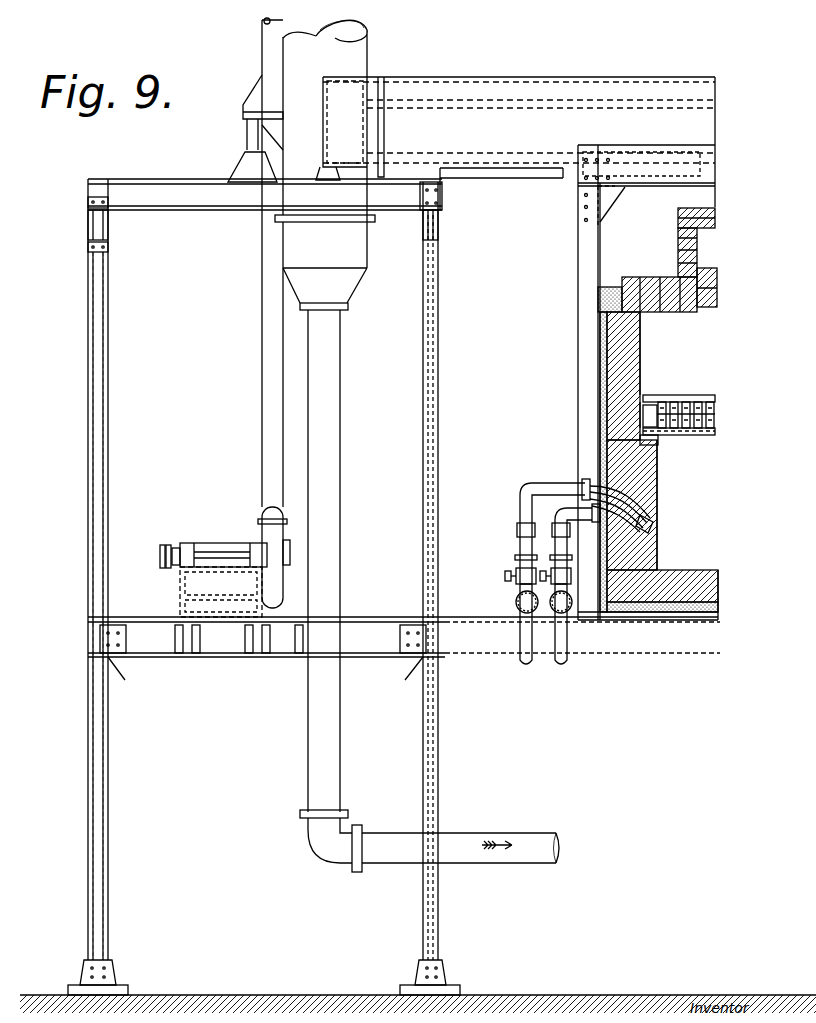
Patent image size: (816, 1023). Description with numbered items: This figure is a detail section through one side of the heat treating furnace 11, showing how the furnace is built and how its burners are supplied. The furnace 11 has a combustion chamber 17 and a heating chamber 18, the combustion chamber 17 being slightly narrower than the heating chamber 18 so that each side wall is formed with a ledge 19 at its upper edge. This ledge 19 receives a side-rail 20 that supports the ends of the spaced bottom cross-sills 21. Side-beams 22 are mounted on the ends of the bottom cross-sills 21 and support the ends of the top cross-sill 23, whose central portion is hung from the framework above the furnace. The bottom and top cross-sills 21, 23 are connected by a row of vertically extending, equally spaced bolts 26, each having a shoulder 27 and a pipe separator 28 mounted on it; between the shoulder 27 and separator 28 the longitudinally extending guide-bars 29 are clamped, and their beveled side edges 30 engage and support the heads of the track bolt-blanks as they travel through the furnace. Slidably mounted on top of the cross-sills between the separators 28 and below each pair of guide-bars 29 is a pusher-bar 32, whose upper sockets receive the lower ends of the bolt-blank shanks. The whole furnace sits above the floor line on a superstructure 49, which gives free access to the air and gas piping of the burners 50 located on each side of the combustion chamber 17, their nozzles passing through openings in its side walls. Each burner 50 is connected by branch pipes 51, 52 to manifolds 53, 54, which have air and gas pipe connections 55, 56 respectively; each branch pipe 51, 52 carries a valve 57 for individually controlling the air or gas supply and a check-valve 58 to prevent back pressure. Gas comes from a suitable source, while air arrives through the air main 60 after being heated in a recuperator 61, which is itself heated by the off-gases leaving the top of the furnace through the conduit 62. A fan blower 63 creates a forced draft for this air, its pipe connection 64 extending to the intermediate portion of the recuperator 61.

The heat treating furnace 11 is at (598, 325).
The combustion chamber 17 is at (686, 551).
The heating chamber 18 is at (648, 343).
The ledge 19 is at (655, 466).
The side-rails 20 is at (643, 440).
The bottom cross-sills 21 is at (712, 436).
The side-beams 22 is at (645, 410).
The top cross-sill 23 is at (714, 398).
The bolts 26 is at (668, 386).
The shoulder 27 is at (698, 402).
The pipe separator 28 is at (713, 423).
The guide-bars 29 is at (686, 395).
The beveled side edges 30 is at (713, 413).
The pusher-bar 32 is at (690, 448).
The superstructure 49 is at (438, 748).
The burners 50 is at (656, 510).
The branch pipe 51 is at (522, 501).
The branch pipe 52 is at (561, 508).
The manifold 53 is at (515, 602).
The manifold 54 is at (572, 615).
The air pipe connection 55 is at (520, 649).
The gas pipe connection 56 is at (566, 662).
The valve 57 is at (552, 576).
The check-valve 58 is at (518, 530).
The air main 60 is at (490, 834).
The recuperator 61 is at (360, 252).
The conduit 62 is at (712, 128).
The fan blower 63 is at (275, 533).
The pipe connection 64 is at (268, 401).